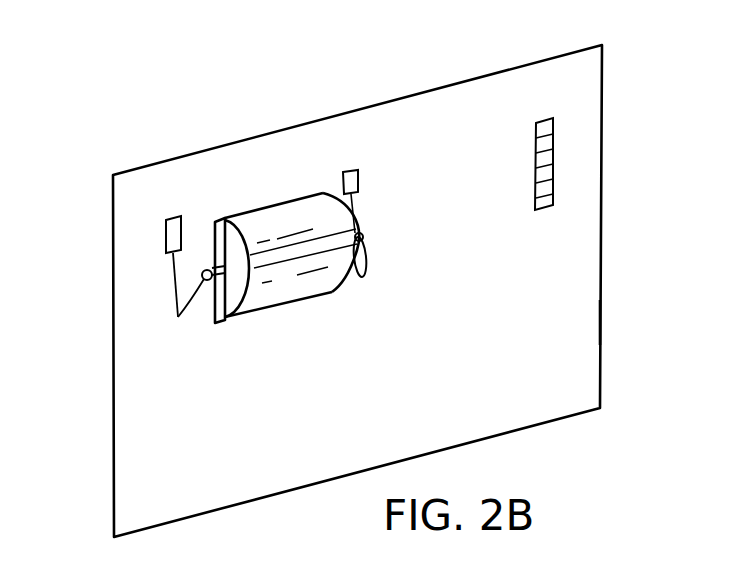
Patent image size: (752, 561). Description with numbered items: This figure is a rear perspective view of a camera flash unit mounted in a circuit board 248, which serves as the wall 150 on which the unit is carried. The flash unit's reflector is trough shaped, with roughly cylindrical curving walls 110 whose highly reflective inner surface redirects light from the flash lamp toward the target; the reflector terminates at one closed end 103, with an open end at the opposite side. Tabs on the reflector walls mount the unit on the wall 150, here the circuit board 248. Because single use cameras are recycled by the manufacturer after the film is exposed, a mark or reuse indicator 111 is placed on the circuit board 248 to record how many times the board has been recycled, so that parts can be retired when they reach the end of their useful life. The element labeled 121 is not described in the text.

The wall 150 is at (113, 213).
The circuit board 248 is at (575, 323).
The reuse indicator 111 is at (553, 167).
The curving walls 110 is at (300, 213).
The closed end 103 is at (312, 277).
The electrode pad and lead wire 121 is at (178, 317).